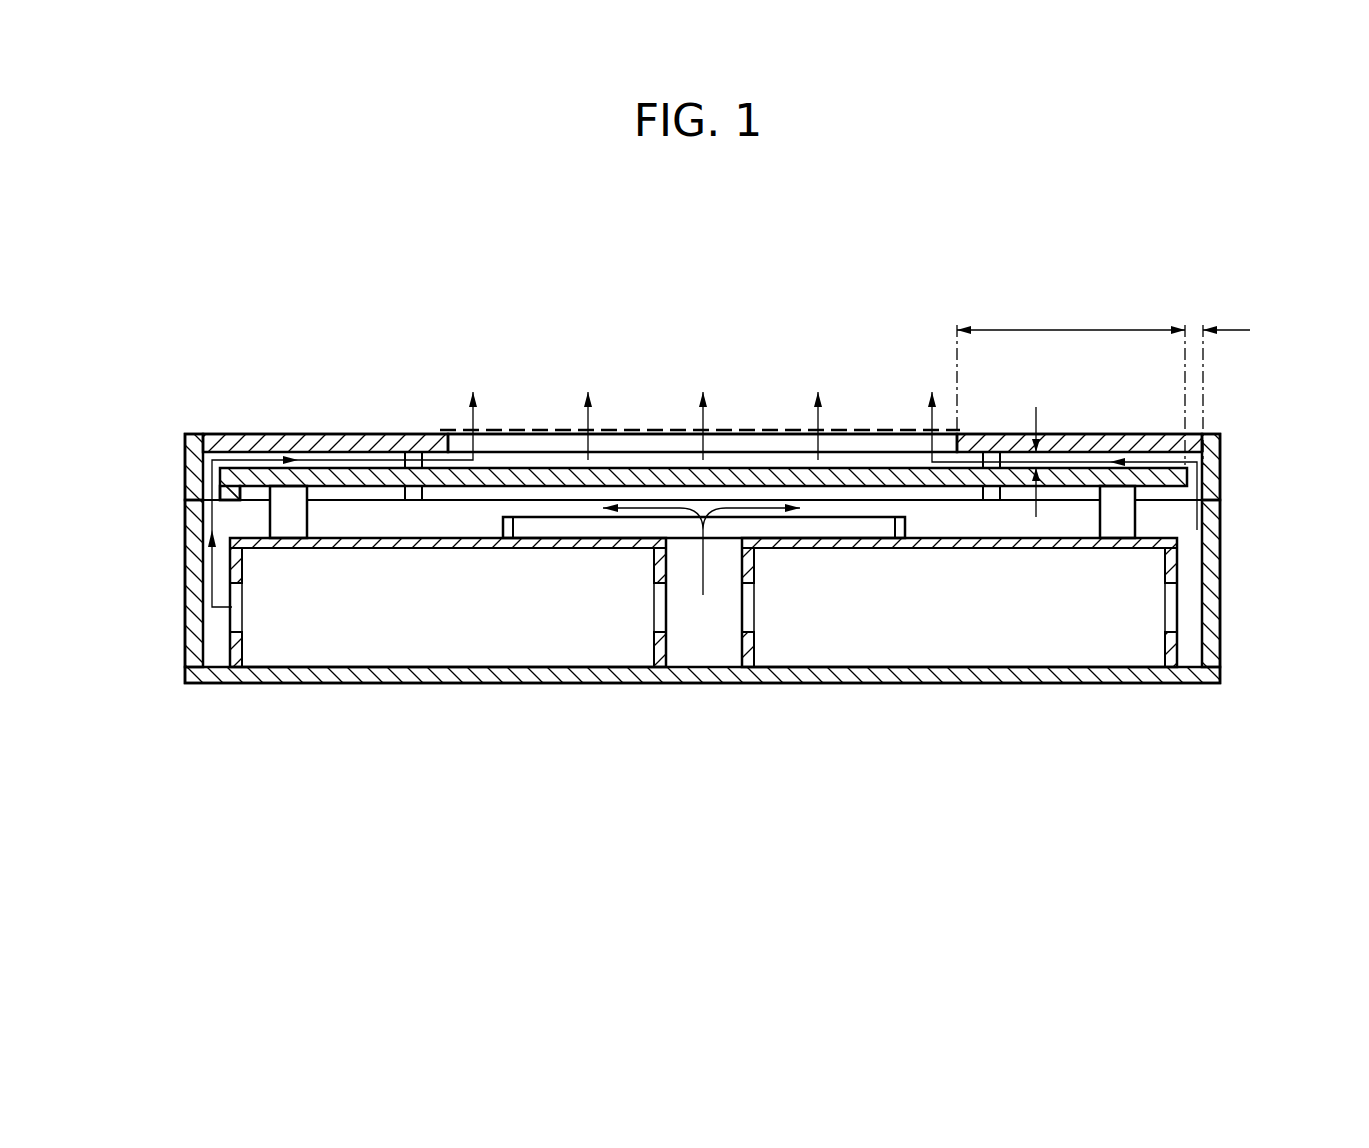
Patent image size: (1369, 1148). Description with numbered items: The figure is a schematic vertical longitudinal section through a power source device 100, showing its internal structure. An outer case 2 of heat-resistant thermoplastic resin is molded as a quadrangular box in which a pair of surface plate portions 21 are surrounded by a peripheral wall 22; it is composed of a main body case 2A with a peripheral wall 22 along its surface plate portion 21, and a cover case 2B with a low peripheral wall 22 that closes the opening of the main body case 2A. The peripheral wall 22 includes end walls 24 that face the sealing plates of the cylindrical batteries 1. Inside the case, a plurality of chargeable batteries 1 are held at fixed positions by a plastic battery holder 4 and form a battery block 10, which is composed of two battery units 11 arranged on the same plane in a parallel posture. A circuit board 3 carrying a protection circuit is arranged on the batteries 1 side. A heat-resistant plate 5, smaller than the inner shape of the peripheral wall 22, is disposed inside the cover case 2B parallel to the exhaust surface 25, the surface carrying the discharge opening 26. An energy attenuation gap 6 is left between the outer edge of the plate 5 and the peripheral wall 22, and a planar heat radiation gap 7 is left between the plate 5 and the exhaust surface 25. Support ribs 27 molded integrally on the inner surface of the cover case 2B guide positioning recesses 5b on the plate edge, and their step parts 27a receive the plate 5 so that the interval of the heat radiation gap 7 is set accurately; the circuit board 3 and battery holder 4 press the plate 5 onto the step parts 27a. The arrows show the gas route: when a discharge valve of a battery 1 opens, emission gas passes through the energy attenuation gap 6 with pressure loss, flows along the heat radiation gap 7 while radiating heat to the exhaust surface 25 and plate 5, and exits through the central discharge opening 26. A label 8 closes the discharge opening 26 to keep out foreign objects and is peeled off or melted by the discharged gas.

The power source device 100 is at (1158, 233).
The battery 1 is at (510, 605).
The outer case 2 is at (1322, 445).
The main body case 2A is at (1250, 500).
The cover case 2B is at (1250, 434).
The circuit board 3 is at (603, 532).
The battery holder 4 is at (420, 547).
The heat-resistant plate 5 is at (640, 480).
The positioning recess 5b is at (233, 468).
The energy attenuation gap 6 is at (207, 455).
The heat radiation gap 7 is at (365, 462).
The label 8 is at (717, 430).
The battery block 10 is at (445, 835).
The battery unit 11 is at (400, 777).
The surface plate portion 21 is at (705, 677).
The peripheral wall 22 is at (100, 410).
The end wall 24 is at (192, 468).
The exhaust surface 25 is at (385, 440).
The discharge opening 26 is at (770, 436).
The support rib 27 is at (222, 508).
The step part 27a is at (243, 478).